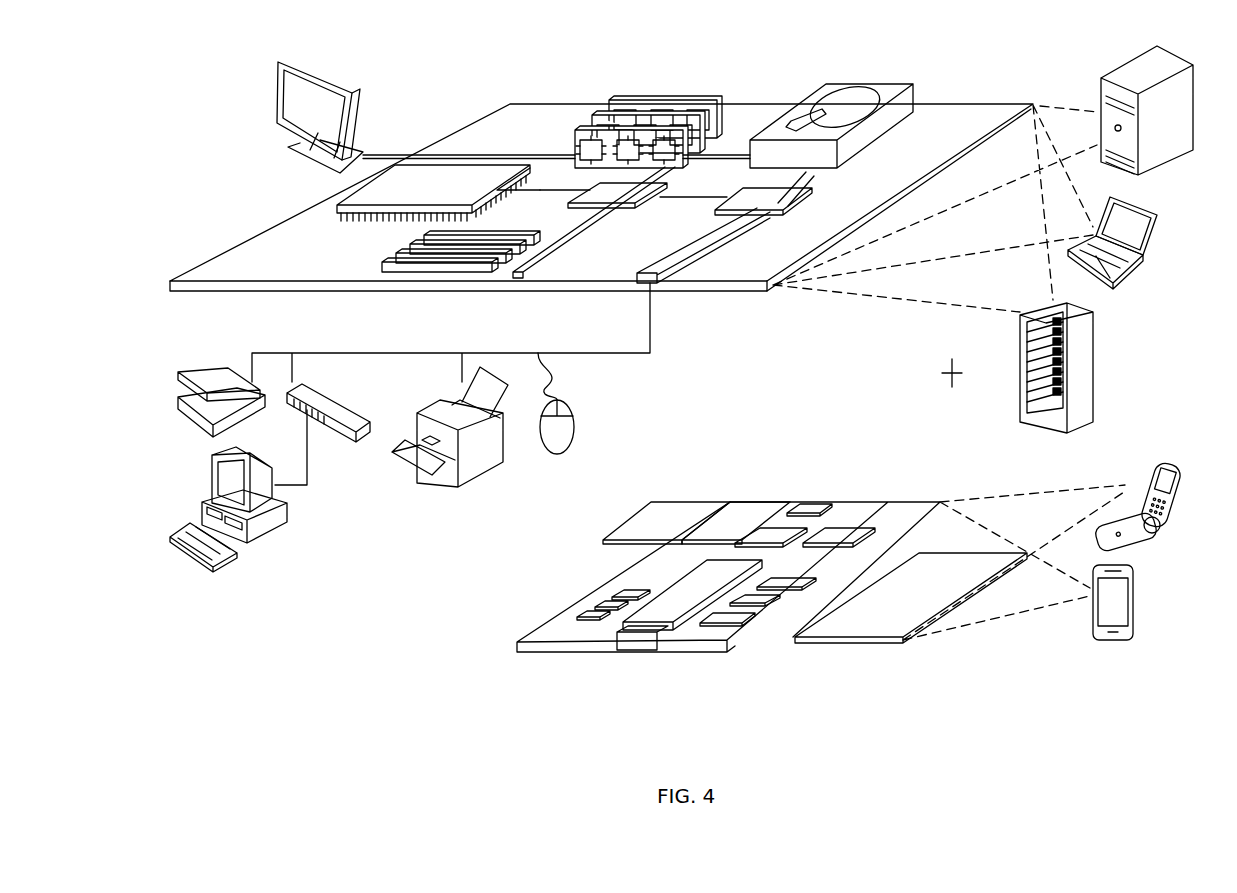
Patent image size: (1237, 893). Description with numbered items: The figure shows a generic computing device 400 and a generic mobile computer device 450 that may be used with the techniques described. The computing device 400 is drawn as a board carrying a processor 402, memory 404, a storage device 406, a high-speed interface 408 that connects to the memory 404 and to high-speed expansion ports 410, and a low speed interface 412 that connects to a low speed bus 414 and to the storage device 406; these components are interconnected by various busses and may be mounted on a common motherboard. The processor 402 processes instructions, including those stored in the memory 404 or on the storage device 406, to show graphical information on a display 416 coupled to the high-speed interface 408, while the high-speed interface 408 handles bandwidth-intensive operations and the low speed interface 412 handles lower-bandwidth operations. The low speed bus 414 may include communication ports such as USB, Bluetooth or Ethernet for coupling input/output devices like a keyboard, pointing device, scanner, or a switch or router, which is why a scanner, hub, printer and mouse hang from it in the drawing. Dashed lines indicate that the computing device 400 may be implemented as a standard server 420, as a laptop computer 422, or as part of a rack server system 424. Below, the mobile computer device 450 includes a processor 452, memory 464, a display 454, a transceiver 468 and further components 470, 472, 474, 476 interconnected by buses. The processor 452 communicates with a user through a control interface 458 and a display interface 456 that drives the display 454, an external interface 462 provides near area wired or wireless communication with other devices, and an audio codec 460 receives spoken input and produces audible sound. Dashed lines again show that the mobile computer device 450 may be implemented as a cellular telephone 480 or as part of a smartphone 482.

The computing device 400 is at (447, 82).
The processor 402 is at (344, 207).
The memory 404 is at (628, 98).
The storage device 406 is at (824, 89).
The high-speed interface 408 is at (597, 192).
The high-speed expansion ports 410 is at (397, 261).
The low speed interface 412 is at (748, 196).
The low speed bus 414 is at (665, 283).
The display 416 is at (283, 58).
The standard server 420 is at (1100, 94).
The laptop computer 422 is at (1160, 216).
The rack server system 424 is at (1020, 389).
The mobile computer device 450 is at (497, 650).
The processor 452 is at (668, 612).
The display 454 is at (877, 630).
The display interface 456 is at (732, 615).
The control interface 458 is at (760, 600).
The audio codec 460 is at (780, 580).
The external interface 462 is at (638, 648).
The memory 464 is at (600, 610).
The transceiver 468 is at (840, 533).
The component 470 is at (815, 503).
The component plate 472 is at (713, 510).
The component plate 474 is at (648, 512).
The component 476 is at (775, 532).
The cellular telephone 480 is at (1132, 460).
The smartphone 482 is at (1093, 636).